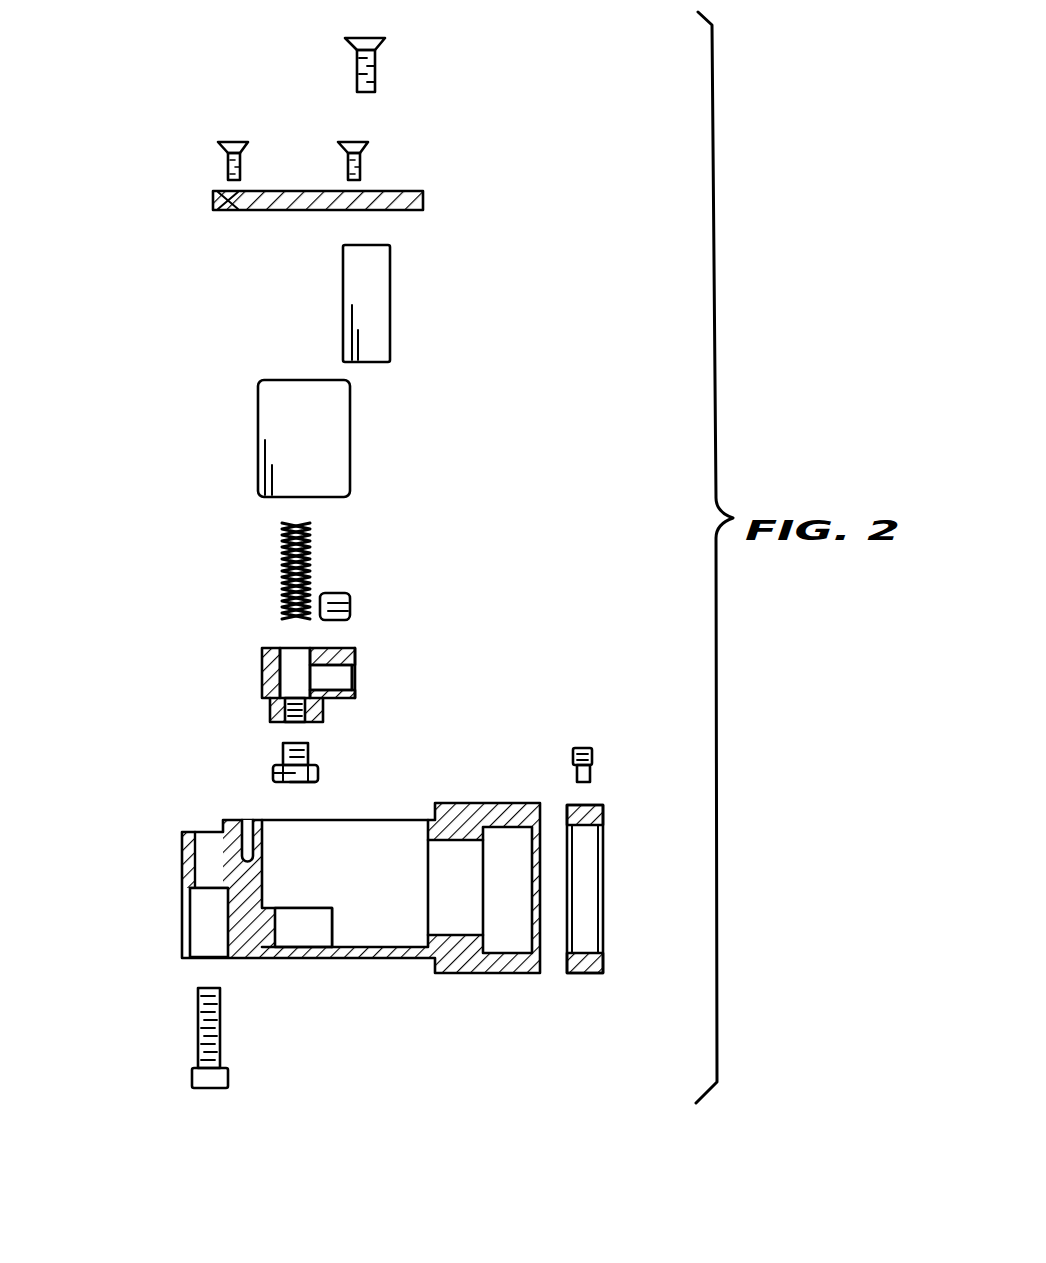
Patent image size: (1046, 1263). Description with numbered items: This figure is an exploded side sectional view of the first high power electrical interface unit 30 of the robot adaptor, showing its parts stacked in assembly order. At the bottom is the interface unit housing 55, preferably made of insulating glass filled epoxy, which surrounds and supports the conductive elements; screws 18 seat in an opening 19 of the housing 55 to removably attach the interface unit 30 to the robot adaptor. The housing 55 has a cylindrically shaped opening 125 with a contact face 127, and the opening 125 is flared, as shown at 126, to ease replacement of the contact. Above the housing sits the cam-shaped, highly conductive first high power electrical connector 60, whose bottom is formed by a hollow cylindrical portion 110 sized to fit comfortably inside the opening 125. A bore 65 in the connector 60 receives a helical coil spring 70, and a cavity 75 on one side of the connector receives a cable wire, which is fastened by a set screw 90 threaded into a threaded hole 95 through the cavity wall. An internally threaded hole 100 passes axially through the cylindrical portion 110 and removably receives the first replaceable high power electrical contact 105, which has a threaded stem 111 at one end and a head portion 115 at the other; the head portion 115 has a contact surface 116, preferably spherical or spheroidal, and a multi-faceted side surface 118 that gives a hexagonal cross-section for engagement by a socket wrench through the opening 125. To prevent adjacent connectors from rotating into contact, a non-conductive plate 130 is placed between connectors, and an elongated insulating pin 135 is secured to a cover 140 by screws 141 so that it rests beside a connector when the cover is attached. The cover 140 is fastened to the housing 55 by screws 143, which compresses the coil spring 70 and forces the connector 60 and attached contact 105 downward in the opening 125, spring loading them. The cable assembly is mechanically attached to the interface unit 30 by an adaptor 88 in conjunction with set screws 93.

The screws 18 is at (198, 1045).
The opening 19 is at (203, 912).
The first high power electrical interface unit 30 is at (120, 795).
The interface unit housing 55 is at (456, 973).
The first high power electrical connector 60 is at (305, 670).
The bore 65 is at (293, 667).
The helical coil spring 70 is at (287, 548).
The cavity 75 is at (347, 678).
The adaptor 88 is at (604, 812).
The set screw 90 is at (337, 593).
The set screws 93 is at (593, 757).
The threaded hole 95 is at (350, 657).
The internally threaded hole 100 is at (303, 716).
The first replaceable high power electrical contact 105 is at (321, 772).
The cylindrical portion 110 is at (325, 706).
The threaded stem 111 is at (309, 757).
The head portion 115 is at (276, 789).
The contact surface 116 is at (302, 782).
The side surface 118 is at (290, 773).
The opening 125 is at (300, 945).
The flare 126 is at (326, 958).
The contact face 127 is at (328, 935).
The non-conductive plate 130 is at (340, 440).
The elongated pin 135 is at (387, 307).
The cover 140 is at (402, 191).
The screws 141 is at (373, 70).
The screws 143 is at (226, 162).